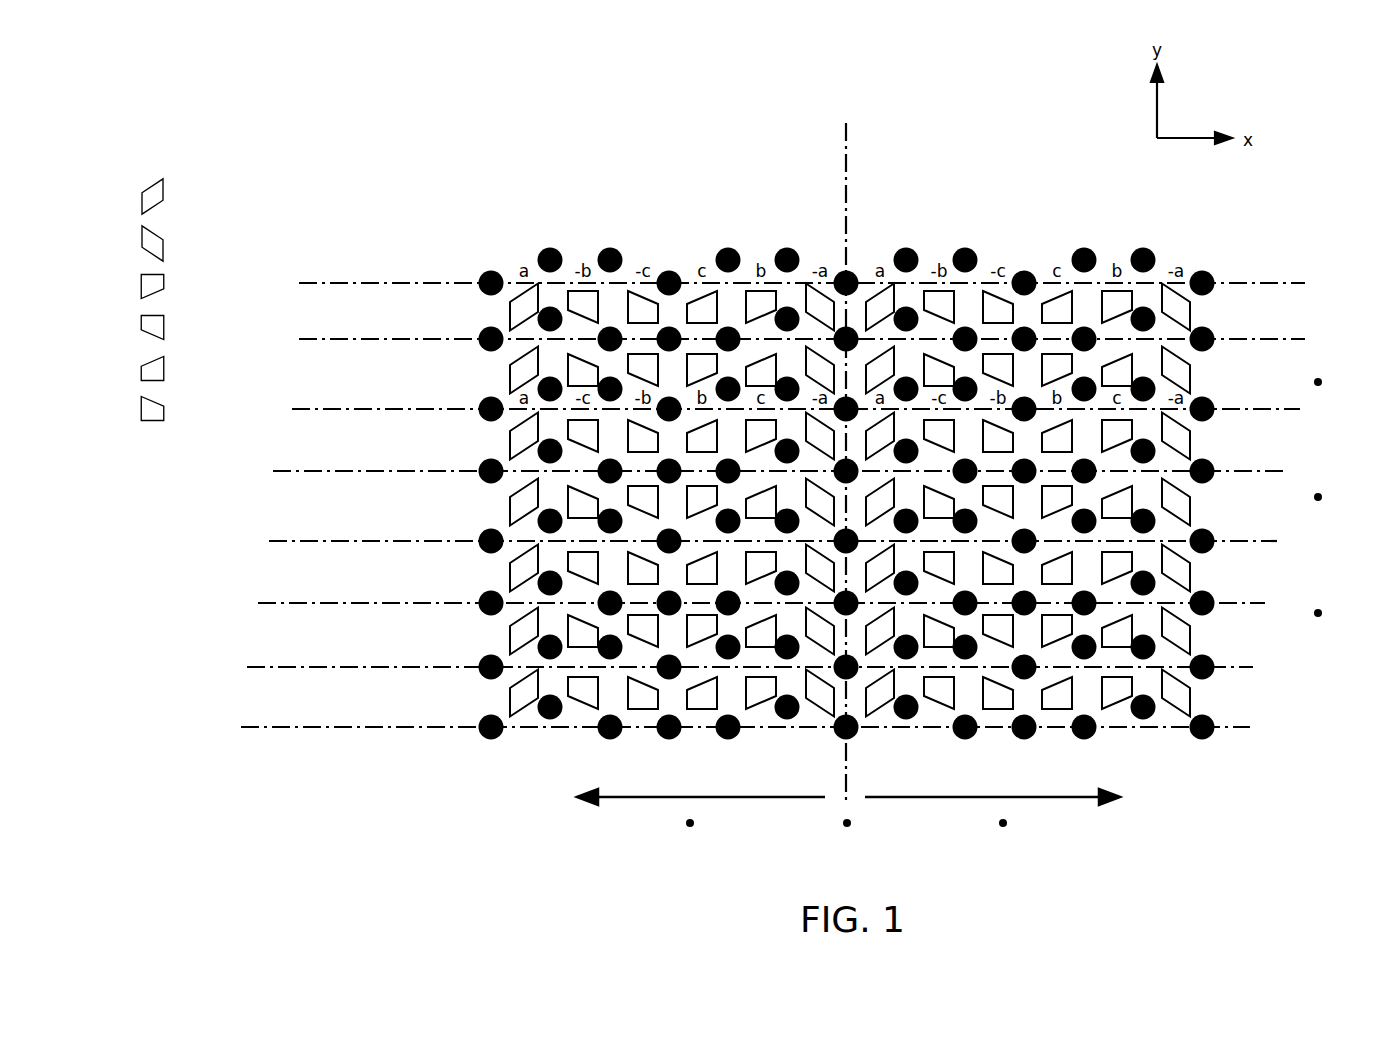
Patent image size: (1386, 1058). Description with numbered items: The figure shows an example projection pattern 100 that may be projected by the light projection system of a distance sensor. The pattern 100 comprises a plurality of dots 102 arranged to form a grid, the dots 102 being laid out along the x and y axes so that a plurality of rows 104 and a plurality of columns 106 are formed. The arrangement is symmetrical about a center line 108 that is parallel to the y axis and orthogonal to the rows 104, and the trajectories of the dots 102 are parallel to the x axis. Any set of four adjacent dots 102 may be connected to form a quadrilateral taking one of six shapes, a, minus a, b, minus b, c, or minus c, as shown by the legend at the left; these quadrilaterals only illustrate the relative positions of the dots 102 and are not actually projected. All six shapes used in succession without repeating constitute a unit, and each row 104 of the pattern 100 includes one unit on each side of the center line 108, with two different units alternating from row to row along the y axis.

The projection pattern 100 is at (167, 43).
The dot 102 is at (552, 250).
The row 104 is at (1265, 283).
The column 106 is at (488, 735).
The center line 108 is at (846, 130).